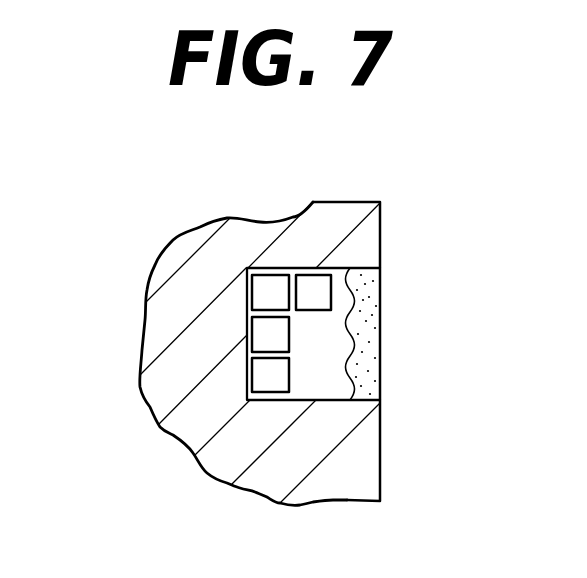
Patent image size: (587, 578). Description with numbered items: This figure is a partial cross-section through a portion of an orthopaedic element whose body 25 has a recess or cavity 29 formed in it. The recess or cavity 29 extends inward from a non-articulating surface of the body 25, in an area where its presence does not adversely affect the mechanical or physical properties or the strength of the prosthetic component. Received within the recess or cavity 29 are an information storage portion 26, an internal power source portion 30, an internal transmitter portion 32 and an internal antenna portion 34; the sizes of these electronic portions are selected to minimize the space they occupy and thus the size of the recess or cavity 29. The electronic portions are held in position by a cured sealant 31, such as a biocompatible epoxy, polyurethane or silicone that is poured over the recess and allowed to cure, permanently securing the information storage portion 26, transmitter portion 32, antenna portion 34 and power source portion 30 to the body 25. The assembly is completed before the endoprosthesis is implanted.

The body of the orthopaedic element 25 is at (367, 457).
The information storage portion 26 is at (263, 292).
The recess or cavity 29 is at (303, 383).
The internal power source portion 30 is at (265, 333).
The cured sealant 31 is at (372, 340).
The transmitter portion 32 is at (265, 375).
The internal antenna portion 34 is at (312, 282).